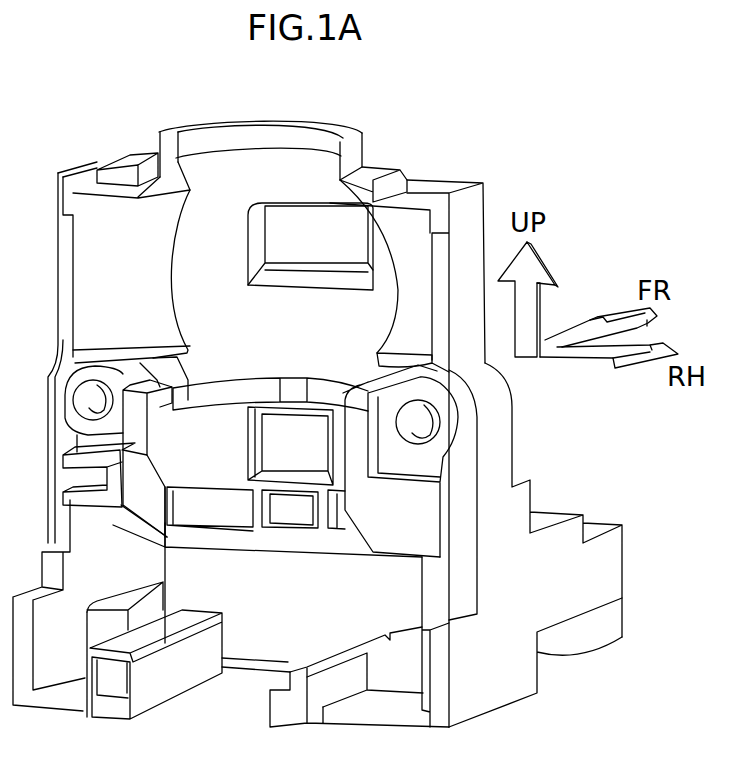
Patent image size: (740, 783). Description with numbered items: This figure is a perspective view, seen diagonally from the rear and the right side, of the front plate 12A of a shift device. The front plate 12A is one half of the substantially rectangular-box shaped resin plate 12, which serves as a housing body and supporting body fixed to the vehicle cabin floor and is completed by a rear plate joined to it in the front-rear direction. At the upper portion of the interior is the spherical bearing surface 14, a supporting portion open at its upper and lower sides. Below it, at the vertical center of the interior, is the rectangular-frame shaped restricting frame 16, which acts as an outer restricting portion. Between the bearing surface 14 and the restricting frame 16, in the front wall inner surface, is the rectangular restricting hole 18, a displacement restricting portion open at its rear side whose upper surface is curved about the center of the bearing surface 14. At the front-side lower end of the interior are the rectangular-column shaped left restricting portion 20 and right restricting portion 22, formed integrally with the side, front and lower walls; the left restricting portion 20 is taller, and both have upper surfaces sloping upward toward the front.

The plate 12 is at (327, 433).
The front plate 12A is at (487, 182).
The bearing surface 14 is at (185, 272).
The restricting frame 16 is at (145, 474).
The restricting hole 18 is at (262, 448).
The left restricting portion 20 is at (118, 597).
The right restricting portion 22 is at (417, 629).